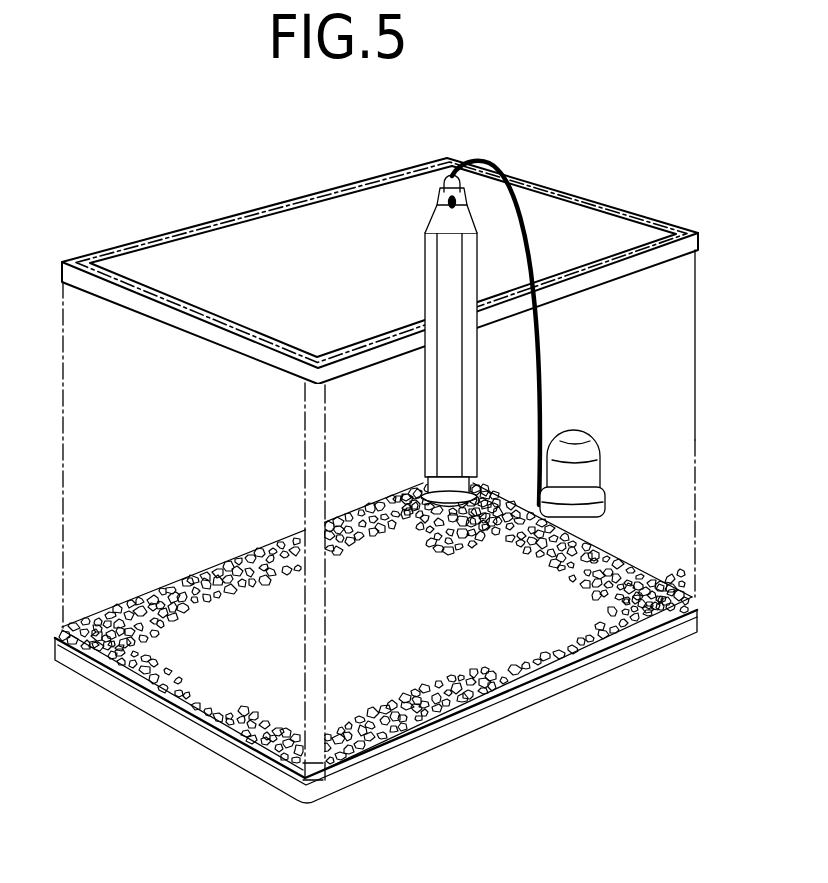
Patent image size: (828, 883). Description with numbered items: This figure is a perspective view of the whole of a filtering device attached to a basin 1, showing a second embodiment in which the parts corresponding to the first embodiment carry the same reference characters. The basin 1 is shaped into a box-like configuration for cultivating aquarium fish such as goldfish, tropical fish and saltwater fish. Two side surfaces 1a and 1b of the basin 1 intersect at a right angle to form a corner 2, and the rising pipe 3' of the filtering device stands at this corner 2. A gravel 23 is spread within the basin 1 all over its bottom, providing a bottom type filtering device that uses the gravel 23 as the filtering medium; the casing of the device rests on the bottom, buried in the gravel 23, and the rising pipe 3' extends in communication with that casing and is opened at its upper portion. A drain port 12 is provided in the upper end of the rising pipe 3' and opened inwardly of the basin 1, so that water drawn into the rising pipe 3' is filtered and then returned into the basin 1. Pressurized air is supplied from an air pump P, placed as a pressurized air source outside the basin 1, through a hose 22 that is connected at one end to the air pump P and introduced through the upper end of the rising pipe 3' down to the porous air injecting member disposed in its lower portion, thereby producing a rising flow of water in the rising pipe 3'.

The basin 1 is at (695, 317).
The side surface 1a is at (496, 232).
The side surface 1b is at (366, 173).
The corner 2 is at (432, 158).
The rising pipe 3' is at (422, 370).
The drain port 12 is at (441, 192).
The hose 22 is at (529, 248).
The gravel 23 is at (495, 678).
The air pump P is at (600, 447).